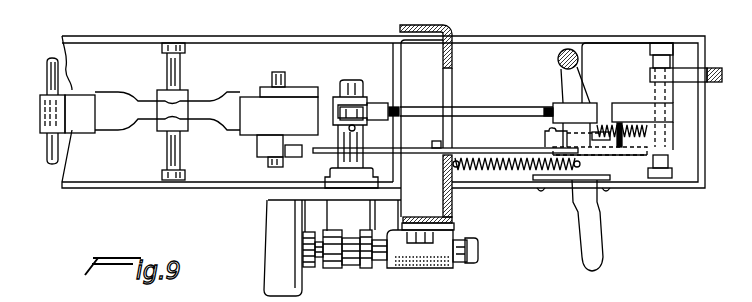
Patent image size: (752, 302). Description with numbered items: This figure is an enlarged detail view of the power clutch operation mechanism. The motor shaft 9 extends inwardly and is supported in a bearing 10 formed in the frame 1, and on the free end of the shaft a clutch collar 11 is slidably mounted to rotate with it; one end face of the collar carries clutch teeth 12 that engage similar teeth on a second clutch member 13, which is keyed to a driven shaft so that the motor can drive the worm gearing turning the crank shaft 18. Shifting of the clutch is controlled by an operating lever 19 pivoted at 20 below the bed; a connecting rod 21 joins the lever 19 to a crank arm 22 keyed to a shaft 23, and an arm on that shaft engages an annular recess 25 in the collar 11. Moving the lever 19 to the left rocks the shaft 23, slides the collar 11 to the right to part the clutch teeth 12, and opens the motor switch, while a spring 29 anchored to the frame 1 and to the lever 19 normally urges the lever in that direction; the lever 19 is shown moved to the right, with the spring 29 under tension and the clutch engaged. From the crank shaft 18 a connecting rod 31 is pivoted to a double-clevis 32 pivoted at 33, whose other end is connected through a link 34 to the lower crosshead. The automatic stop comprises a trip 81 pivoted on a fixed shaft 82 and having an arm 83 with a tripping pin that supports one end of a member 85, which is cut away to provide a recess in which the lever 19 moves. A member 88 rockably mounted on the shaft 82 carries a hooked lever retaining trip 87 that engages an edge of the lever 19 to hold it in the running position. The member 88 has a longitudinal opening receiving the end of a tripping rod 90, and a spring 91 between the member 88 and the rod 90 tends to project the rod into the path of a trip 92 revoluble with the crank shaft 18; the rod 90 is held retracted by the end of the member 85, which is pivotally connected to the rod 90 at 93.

The frame 1 is at (443, 185).
The motor shaft 9 is at (467, 268).
The bearing 10 is at (417, 268).
The clutch collar 11 is at (367, 268).
The clutch teeth 12 is at (313, 268).
The second clutch member 13 is at (307, 232).
The crank shaft 18 is at (295, 92).
The operating lever 19 is at (595, 228).
The pivot 20 is at (579, 62).
The connecting rod 21 is at (488, 113).
The crank arm 22 is at (331, 110).
The shaft 23 is at (363, 91).
The annular recess 25 is at (352, 268).
The spring 29 is at (500, 170).
The connecting rod 31 is at (279, 116).
The double-clevis 32 is at (110, 131).
The pivot 33 is at (178, 72).
The link 34 is at (46, 116).
The trip 81 is at (715, 83).
The fixed shaft 82 is at (652, 95).
The arm 83 is at (642, 114).
The member 85 is at (492, 148).
The lever retaining trip 87 is at (590, 150).
The member 88 is at (546, 130).
The tripping rod 90 is at (362, 153).
The spring 91 is at (612, 125).
The trip 92 is at (291, 167).
The pivotal connection 93 is at (434, 155).